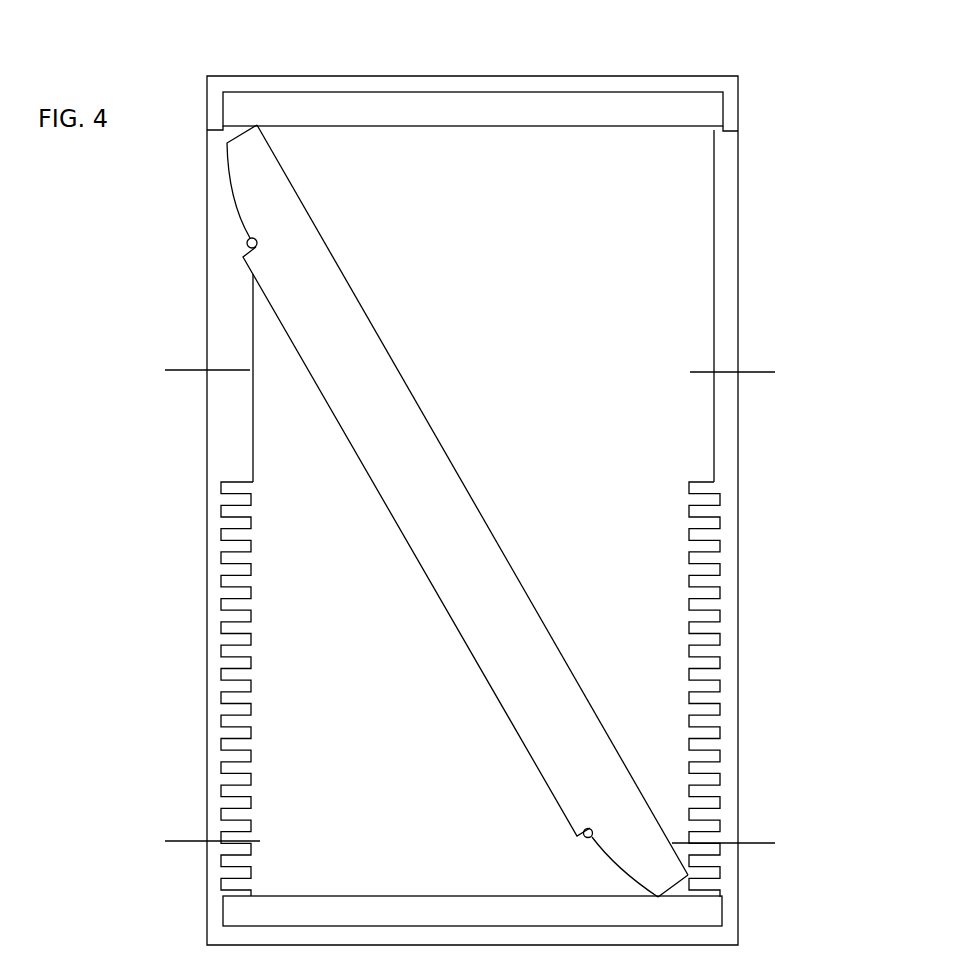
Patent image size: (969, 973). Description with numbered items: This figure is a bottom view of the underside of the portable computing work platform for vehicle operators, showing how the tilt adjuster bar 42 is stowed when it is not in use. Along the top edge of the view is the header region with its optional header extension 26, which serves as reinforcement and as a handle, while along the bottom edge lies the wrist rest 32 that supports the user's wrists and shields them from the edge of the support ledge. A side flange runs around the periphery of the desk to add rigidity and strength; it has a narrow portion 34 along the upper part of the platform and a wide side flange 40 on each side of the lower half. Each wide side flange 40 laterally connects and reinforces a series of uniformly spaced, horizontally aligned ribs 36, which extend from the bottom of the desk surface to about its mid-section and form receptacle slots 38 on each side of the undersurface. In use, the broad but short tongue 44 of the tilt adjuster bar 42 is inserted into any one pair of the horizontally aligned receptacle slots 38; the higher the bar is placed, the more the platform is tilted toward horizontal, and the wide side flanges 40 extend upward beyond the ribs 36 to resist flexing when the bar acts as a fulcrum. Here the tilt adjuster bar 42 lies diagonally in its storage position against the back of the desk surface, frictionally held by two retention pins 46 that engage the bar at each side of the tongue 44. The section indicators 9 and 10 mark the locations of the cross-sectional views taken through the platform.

The header extension 26 is at (712, 105).
The wrist rest 32 is at (690, 918).
The narrow portion of side flange 34 is at (535, 82).
The ribs 36 is at (710, 512).
The receptacle slots 38 is at (710, 570).
The wide side flange 40 is at (728, 652).
The tilt adjuster bar 42 is at (438, 477).
The tongue 44 is at (588, 854).
The retention pins 46 is at (247, 243).
The section line 9 is at (182, 385).
The section line 10 is at (182, 858).